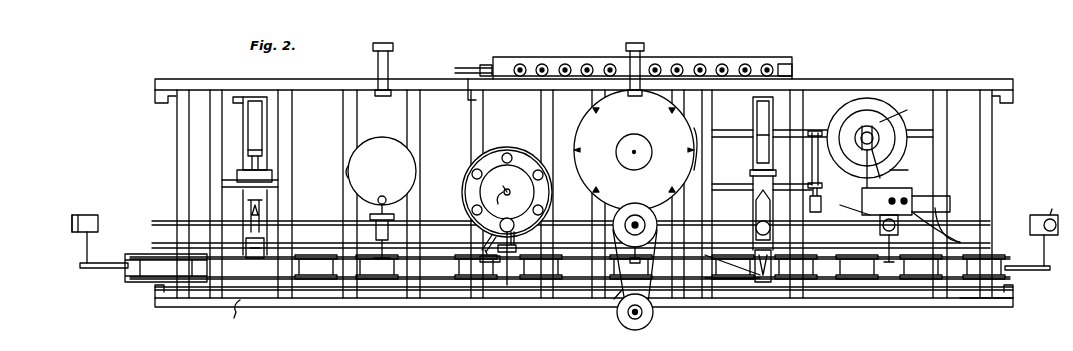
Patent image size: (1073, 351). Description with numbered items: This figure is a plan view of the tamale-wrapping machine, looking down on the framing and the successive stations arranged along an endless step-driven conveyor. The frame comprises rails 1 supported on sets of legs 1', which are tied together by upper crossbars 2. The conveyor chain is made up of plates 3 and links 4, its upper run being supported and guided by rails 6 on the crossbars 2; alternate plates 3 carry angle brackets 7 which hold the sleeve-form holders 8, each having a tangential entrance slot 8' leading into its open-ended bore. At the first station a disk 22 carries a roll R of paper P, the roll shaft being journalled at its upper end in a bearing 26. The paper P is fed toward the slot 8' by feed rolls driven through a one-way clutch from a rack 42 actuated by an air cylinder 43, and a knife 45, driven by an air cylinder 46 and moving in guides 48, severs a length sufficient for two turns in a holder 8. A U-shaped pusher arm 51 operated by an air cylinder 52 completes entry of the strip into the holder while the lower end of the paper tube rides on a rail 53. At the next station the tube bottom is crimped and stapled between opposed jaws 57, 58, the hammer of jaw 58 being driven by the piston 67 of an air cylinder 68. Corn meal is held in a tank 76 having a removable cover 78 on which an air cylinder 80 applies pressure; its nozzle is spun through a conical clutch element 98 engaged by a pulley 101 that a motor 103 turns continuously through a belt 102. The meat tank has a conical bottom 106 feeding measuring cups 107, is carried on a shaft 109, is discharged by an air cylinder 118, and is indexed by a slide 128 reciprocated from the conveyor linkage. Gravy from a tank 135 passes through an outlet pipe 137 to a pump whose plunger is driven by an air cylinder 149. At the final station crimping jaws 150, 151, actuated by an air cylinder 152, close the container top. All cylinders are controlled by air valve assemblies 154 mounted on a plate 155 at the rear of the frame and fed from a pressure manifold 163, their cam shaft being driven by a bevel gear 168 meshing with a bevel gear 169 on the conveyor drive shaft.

The rails 1 is at (584, 197).
The legs 1' is at (241, 315).
The upper crossbars 2 is at (408, 125).
The plates 3 is at (130, 278).
The links 4 is at (150, 275).
The rails 6 is at (918, 292).
The angle brackets 7 is at (90, 255).
The holders 8 is at (565, 229).
The tangential entrance slots 8' is at (1054, 205).
The disk 22 is at (882, 169).
The bearing 26 is at (874, 134).
The rack 42 is at (858, 220).
The air cylinder 43 is at (745, 282).
The knife 45 is at (942, 231).
The air cylinder 46 is at (952, 212).
The guides 48 is at (882, 218).
The U-shaped pusher arm 51 is at (822, 202).
The air cylinder 52 is at (821, 176).
The rail 53 is at (168, 213).
The crimping jaw 57 is at (760, 282).
The crimping jaw 58 is at (756, 207).
The piston 67 is at (752, 172).
The air cylinder 68 is at (756, 128).
The tank 76 is at (584, 115).
The removable cover 78 is at (700, 120).
The air cylinder 80 is at (616, 142).
The conical clutch element 98 is at (637, 218).
The pulley 101 is at (626, 208).
The belt 102 is at (618, 303).
The motor 103 is at (648, 322).
The conical bottom 106 is at (516, 168).
The measuring cups 107 is at (474, 200).
The shaft 109 is at (504, 197).
The air cylinder 118 is at (515, 236).
The slide 128 is at (452, 238).
The tank 135 is at (347, 174).
The outlet pipe 137 is at (383, 196).
The air cylinder 149 is at (376, 64).
The crimping jaw 150 is at (255, 249).
The crimping jaw 151 is at (264, 174).
The air cylinder 152 is at (262, 128).
The air valve assembly 154 is at (745, 64).
The plate 155 is at (792, 64).
The pressure manifold 163 is at (568, 58).
The bevel gear 168 is at (486, 66).
The bevel gear 169 is at (468, 98).
The roll R is at (894, 109).
The paper strip P is at (906, 170).